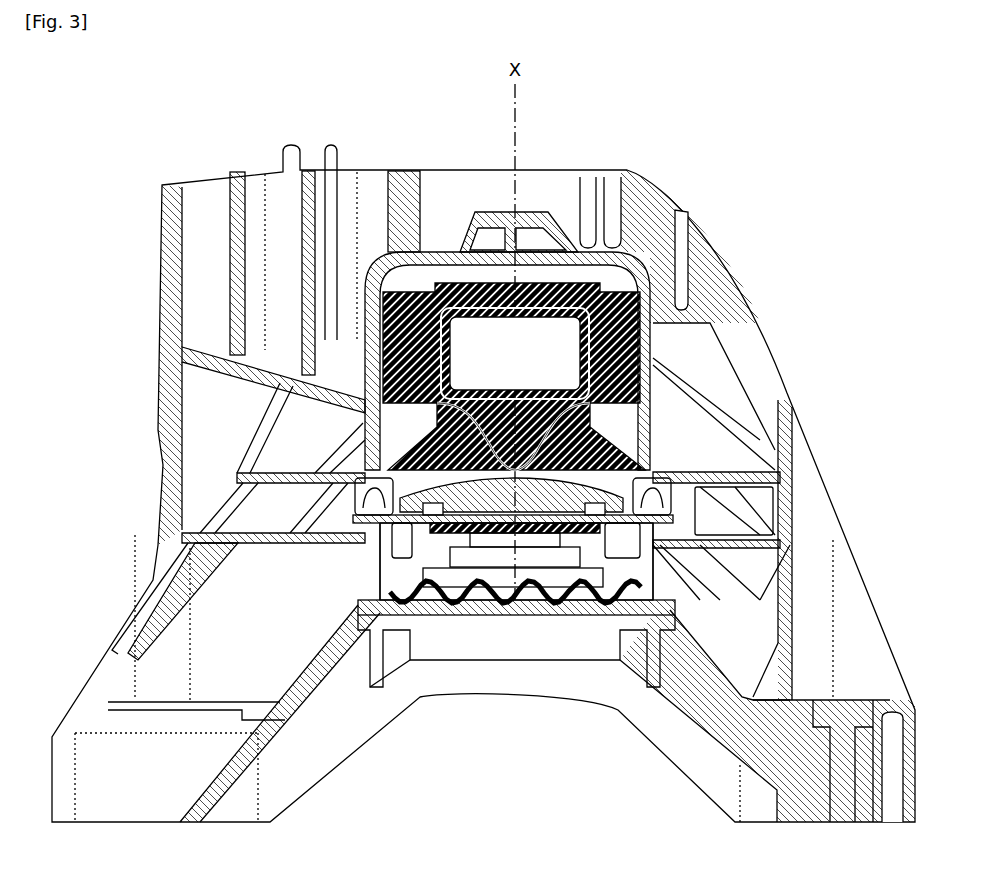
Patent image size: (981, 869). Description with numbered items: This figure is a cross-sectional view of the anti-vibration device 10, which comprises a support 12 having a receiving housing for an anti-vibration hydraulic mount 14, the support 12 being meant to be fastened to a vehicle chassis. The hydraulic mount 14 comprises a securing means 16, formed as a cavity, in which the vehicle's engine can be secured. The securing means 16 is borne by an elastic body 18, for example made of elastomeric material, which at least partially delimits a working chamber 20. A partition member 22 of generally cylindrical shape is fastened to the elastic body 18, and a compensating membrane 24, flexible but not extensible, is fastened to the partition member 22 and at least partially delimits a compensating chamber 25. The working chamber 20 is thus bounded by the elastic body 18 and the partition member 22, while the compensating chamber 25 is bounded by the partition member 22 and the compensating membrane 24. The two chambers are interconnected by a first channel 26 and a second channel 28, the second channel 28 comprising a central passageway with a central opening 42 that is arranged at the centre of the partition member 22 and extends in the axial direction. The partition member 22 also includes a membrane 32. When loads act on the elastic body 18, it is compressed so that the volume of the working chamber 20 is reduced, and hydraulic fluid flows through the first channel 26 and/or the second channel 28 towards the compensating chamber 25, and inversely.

The anti-vibration device 10 is at (222, 164).
The support 12 is at (643, 178).
The anti-vibration hydraulic mount 14 is at (605, 296).
The securing means 16 is at (560, 330).
The elastic body 18 is at (612, 420).
The working chamber 20 is at (521, 503).
The partition member 22 is at (658, 553).
The compensating membrane 24 is at (548, 620).
The compensating chamber 25 is at (490, 615).
The first channel 26 is at (627, 535).
The second channel 28 is at (473, 617).
The membrane 32 is at (596, 615).
The central opening 42 is at (532, 615).